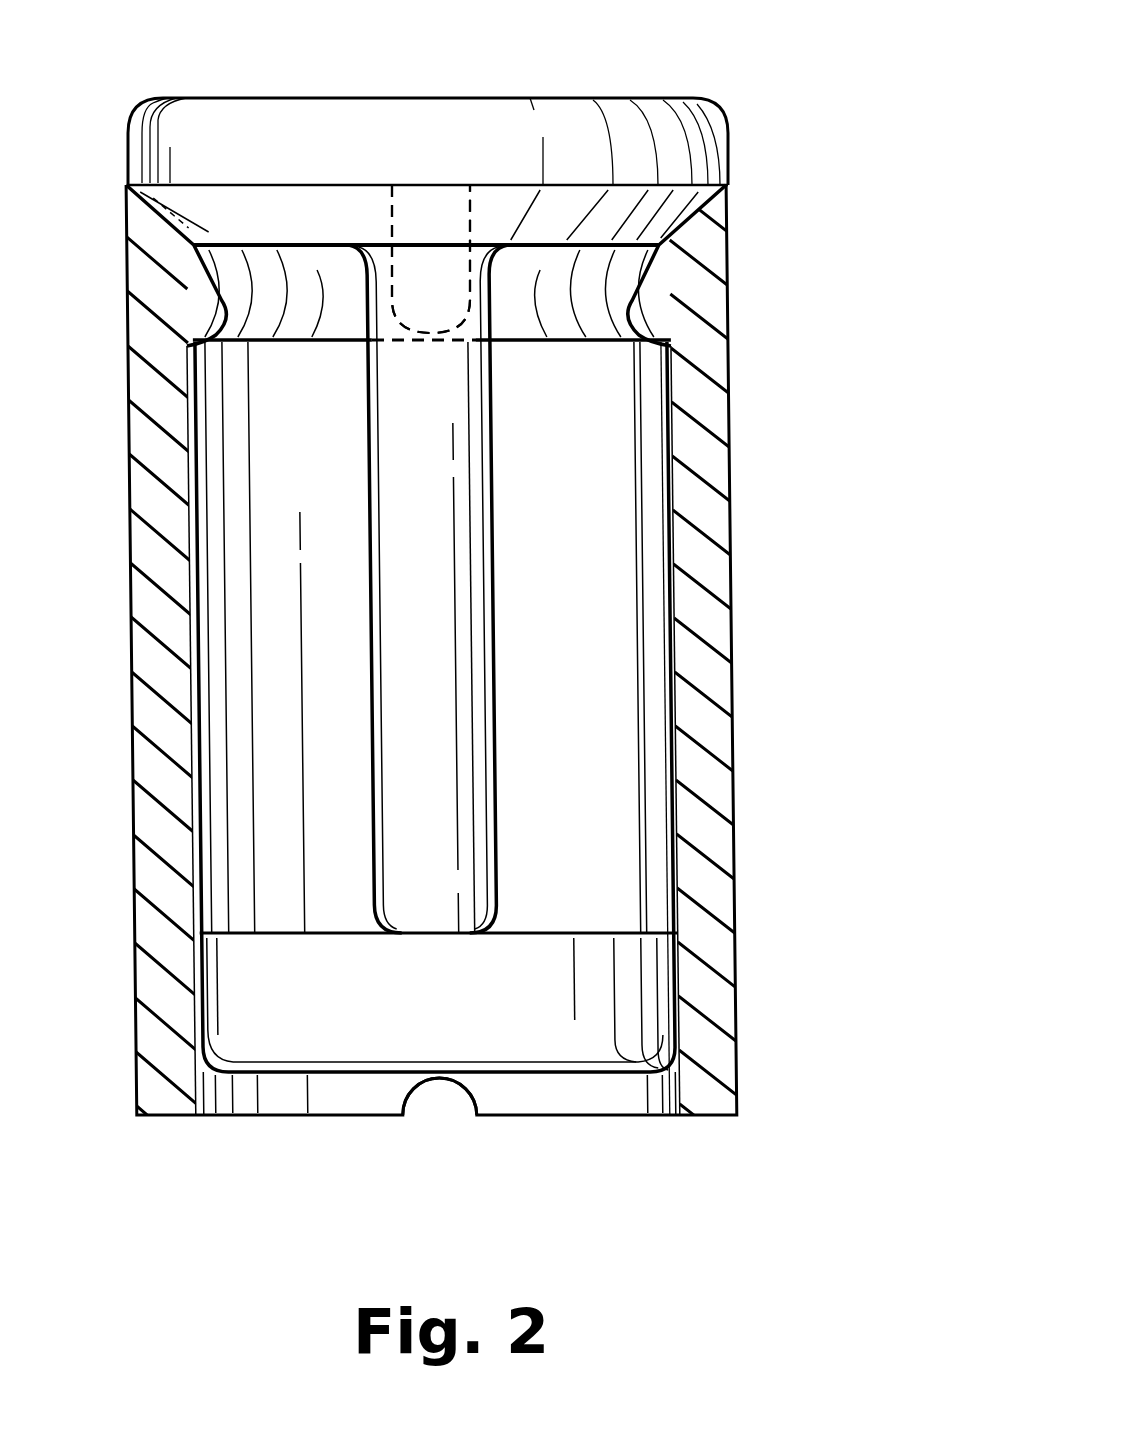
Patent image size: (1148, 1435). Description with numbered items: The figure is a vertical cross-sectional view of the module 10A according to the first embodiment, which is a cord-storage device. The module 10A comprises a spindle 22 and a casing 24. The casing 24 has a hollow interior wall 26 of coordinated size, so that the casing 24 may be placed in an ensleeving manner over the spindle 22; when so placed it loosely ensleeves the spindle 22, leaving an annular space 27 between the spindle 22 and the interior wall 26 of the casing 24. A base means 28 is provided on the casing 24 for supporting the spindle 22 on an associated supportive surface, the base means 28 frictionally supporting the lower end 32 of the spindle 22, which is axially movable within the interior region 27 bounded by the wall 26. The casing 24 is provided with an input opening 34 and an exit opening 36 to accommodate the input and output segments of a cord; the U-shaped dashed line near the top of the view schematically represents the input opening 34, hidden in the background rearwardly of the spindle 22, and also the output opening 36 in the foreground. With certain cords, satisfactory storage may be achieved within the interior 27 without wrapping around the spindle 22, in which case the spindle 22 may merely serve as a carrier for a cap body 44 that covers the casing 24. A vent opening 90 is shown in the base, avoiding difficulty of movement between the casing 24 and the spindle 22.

The module 10A is at (752, 148).
The spindle 22 is at (462, 597).
The casing 24 is at (735, 551).
The hollow interior wall 26 is at (673, 690).
The annular space 27 is at (582, 760).
The base means 28 is at (718, 1077).
The lower end of the spindle 32 is at (530, 1045).
The input opening 34 is at (466, 188).
The exit opening 36 is at (431, 259).
The cap body 44 is at (378, 98).
The vent opening 90 is at (429, 1108).